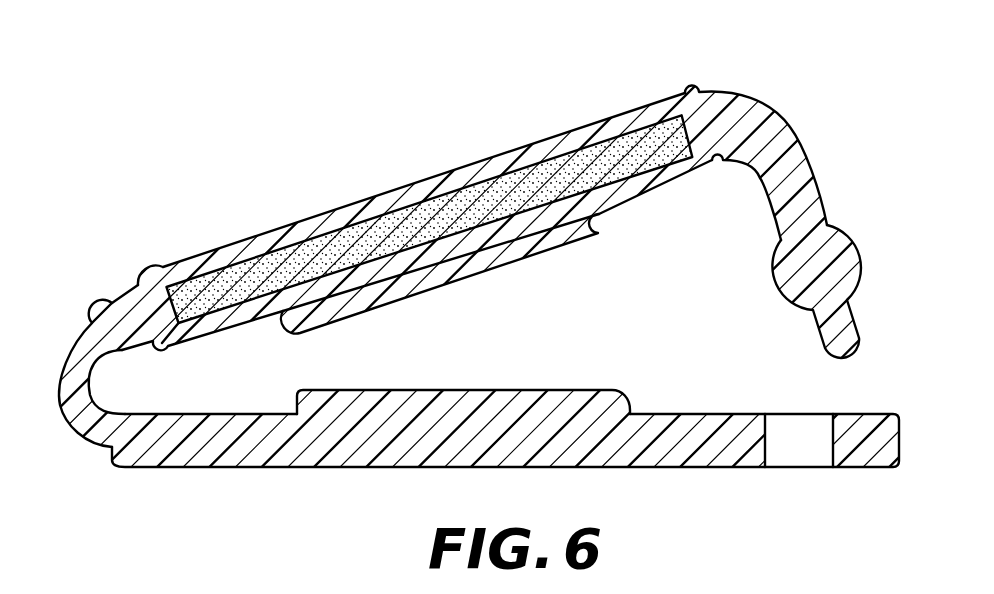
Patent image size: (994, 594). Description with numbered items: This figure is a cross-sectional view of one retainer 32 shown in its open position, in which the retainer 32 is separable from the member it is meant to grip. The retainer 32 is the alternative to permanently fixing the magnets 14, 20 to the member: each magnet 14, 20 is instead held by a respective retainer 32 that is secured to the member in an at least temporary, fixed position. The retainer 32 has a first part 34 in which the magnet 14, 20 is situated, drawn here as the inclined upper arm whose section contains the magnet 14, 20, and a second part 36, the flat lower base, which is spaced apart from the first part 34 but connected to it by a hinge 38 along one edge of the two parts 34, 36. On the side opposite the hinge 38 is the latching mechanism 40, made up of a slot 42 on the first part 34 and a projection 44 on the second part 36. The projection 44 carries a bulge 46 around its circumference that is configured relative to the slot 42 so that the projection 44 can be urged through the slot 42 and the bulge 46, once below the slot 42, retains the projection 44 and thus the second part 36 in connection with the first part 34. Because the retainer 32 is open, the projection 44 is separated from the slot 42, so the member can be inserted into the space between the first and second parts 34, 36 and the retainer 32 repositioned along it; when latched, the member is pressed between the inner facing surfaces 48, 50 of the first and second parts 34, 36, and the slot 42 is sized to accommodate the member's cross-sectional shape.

The magnet 14 is at (469, 297).
The magnet 20 is at (640, 129).
The retainer 32 is at (282, 119).
The first part 34 is at (152, 261).
The second part 36 is at (234, 471).
The hinge 38 is at (60, 420).
The latching mechanism 40 is at (792, 196).
The slot 42 is at (767, 447).
The projection 44 is at (810, 167).
The bulge 46 is at (777, 280).
The inner facing surface 48 is at (580, 243).
The inner facing surface 50 is at (503, 390).